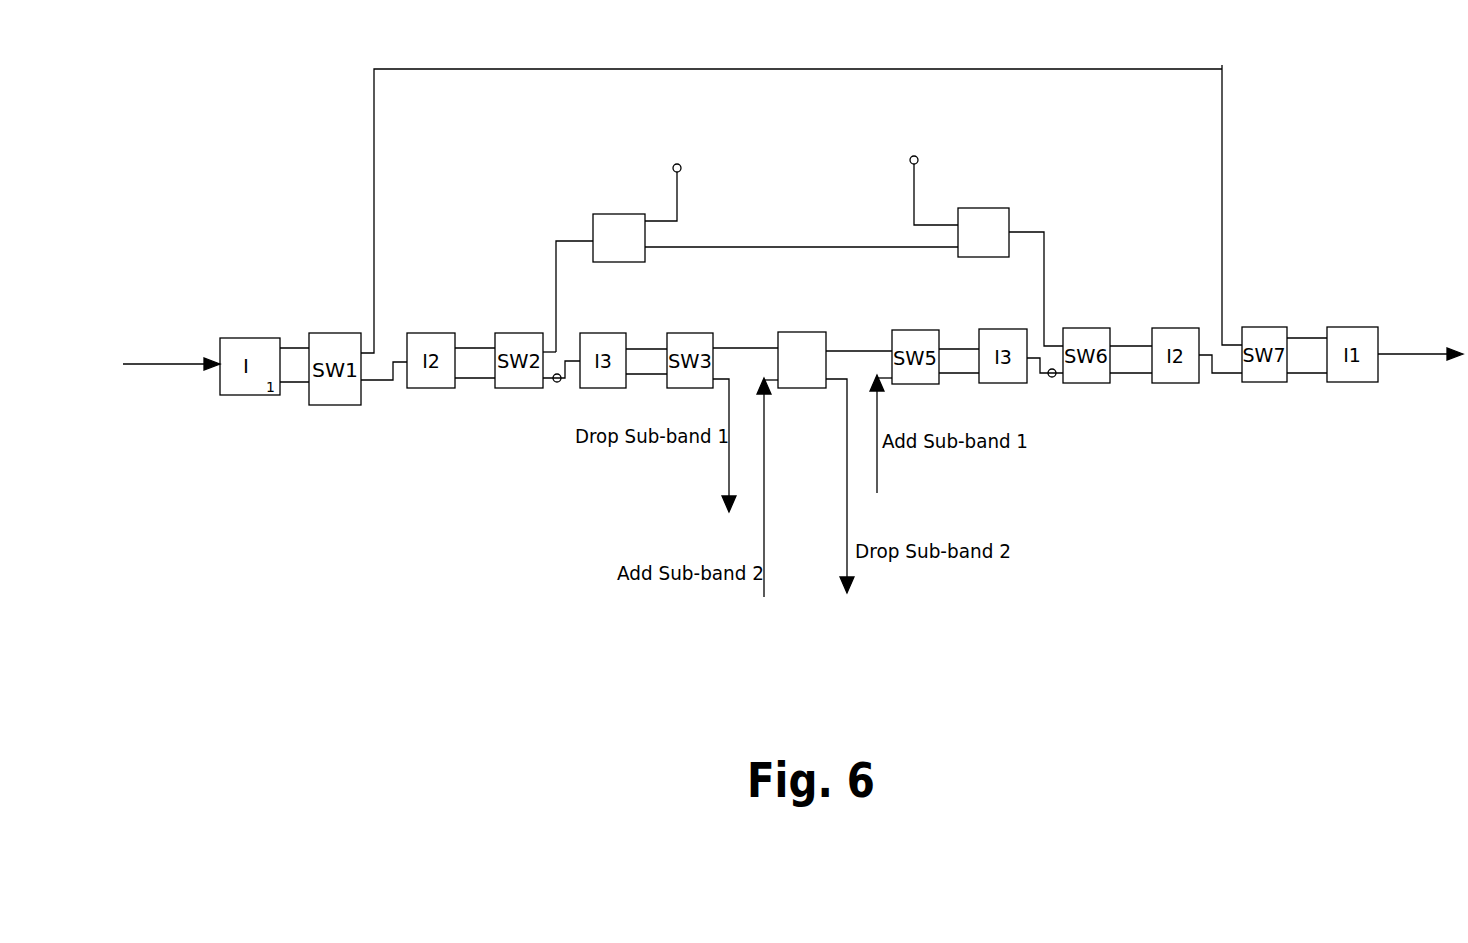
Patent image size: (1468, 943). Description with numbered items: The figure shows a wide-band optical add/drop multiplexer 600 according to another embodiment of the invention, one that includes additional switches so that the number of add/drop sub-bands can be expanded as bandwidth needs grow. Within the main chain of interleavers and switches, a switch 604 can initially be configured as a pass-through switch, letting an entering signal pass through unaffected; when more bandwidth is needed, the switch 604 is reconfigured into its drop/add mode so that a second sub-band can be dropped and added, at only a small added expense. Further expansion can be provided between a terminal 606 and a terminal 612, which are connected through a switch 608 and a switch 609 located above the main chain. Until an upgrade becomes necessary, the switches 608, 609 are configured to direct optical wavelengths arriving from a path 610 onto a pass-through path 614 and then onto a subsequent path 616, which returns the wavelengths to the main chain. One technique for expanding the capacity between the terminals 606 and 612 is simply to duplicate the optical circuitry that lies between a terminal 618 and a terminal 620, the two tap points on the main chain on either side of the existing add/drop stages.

The optical add/drop node 600 is at (357, 551).
The switch 604 is at (800, 332).
The terminal 606 is at (673, 164).
The switch 608 is at (604, 213).
The switch 609 is at (1002, 212).
The path 610 is at (553, 287).
The terminal 612 is at (910, 157).
The pass-through path 614 is at (722, 247).
The subsequent path 616 is at (1045, 262).
The terminal 618 is at (556, 382).
The terminal 620 is at (1054, 377).